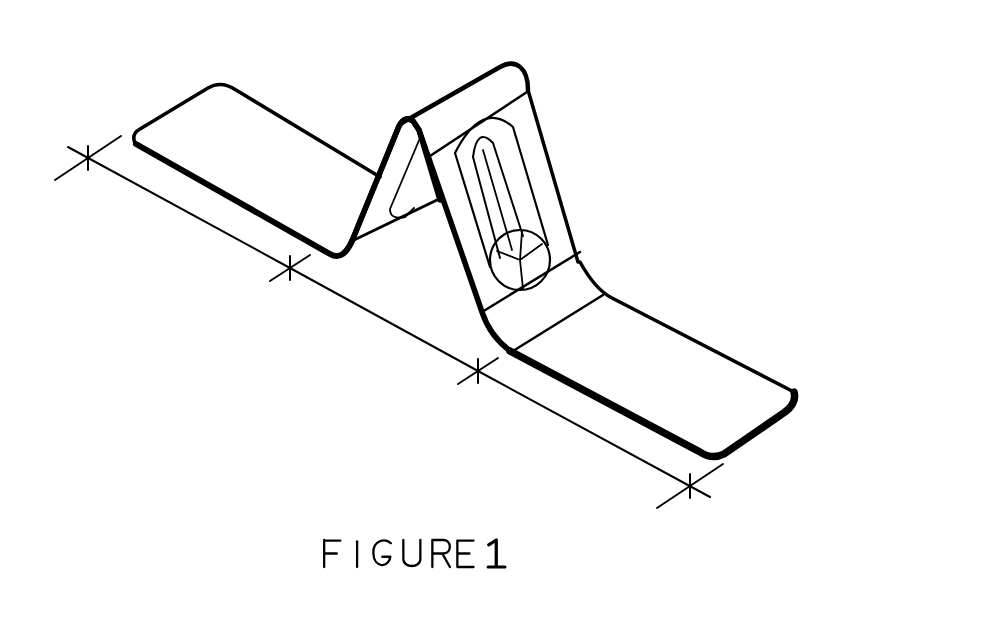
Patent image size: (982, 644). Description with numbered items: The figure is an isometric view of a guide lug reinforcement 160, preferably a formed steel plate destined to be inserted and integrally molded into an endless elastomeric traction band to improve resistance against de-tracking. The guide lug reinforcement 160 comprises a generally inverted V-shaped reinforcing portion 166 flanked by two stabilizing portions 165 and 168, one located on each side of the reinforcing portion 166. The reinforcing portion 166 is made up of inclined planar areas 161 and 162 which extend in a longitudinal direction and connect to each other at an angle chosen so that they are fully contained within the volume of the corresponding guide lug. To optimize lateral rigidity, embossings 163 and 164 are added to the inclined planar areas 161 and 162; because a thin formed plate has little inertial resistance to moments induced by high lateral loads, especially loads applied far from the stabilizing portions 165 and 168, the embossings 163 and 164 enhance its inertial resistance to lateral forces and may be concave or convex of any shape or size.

The guide lug reinforcement 160 is at (464, 238).
The inclined planar area 161 is at (567, 154).
The inclined planar area 162 is at (359, 176).
The embossing 163 is at (583, 204).
The embossing 164 is at (412, 190).
The stabilizing portion 165 is at (562, 432).
The reinforcing portion 166 is at (358, 322).
The stabilizing portion 168 is at (167, 217).